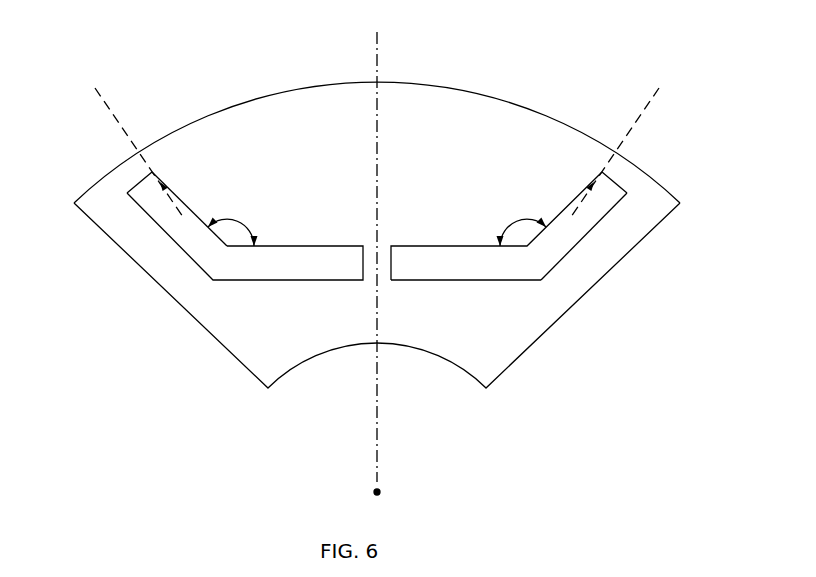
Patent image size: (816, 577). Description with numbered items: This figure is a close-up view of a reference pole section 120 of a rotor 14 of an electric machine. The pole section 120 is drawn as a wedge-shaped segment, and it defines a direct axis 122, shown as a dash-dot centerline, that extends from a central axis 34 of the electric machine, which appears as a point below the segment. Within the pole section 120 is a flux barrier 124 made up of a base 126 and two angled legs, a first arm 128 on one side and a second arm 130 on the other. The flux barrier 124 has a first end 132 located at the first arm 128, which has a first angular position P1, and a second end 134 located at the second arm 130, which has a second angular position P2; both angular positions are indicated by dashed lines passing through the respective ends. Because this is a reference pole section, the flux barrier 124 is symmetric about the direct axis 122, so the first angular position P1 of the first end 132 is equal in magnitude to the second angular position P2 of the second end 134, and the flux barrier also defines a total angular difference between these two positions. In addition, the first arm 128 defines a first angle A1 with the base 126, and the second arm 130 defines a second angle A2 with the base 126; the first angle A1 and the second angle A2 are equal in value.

The rotor 14 is at (377, 195).
The central axis 34 is at (380, 492).
The pole section 120 is at (522, 118).
The direct axis 122 is at (377, 55).
The flux barrier 124 is at (548, 236).
The base 126 is at (480, 280).
The first arm 128 is at (193, 208).
The second arm 130 is at (577, 245).
The first end 132 is at (137, 181).
The second end 134 is at (621, 181).
The first angle A1 is at (242, 222).
The second angle A2 is at (522, 228).
The first angular position P1 is at (132, 137).
The second angular position P2 is at (623, 138).